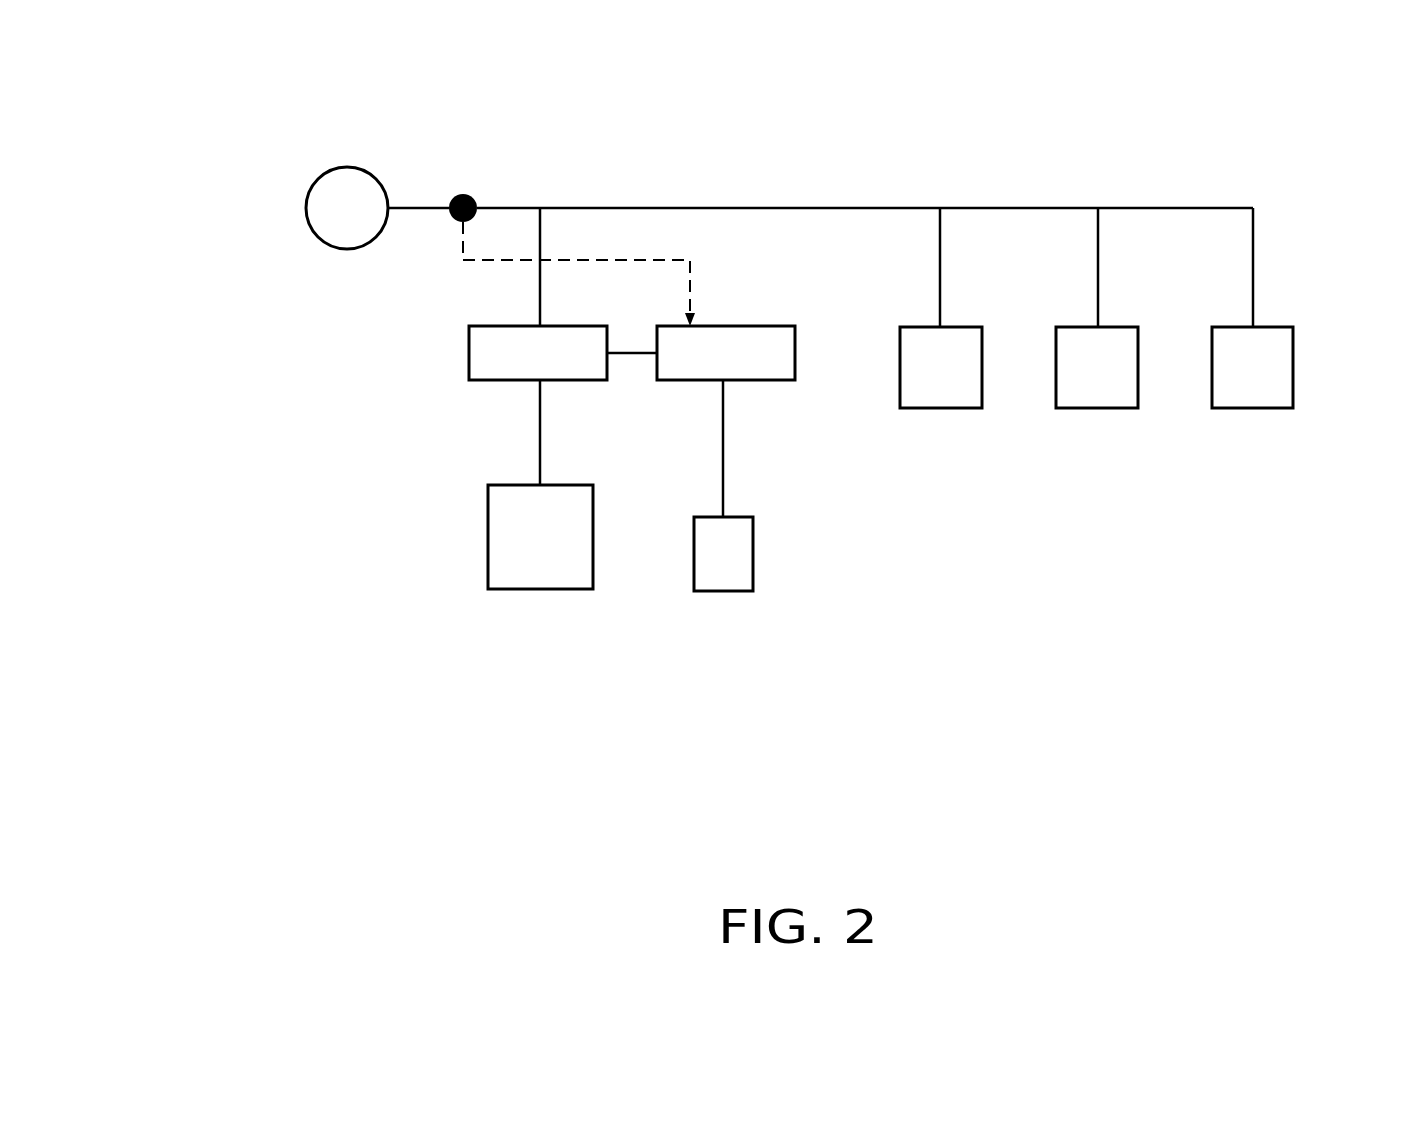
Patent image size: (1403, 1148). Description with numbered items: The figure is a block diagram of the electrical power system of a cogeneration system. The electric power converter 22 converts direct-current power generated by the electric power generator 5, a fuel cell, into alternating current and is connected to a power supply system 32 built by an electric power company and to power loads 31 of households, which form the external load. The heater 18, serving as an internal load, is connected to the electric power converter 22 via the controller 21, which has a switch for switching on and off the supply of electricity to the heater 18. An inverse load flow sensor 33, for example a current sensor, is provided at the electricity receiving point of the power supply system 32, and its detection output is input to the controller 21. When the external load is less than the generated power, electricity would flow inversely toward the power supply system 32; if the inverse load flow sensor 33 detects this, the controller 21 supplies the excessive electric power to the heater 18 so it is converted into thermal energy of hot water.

The power supply system 32 is at (313, 187).
The inverse load flow sensor 33 is at (472, 196).
The controller 21 is at (770, 326).
The electric power converter 22 is at (492, 380).
The electric power generator 5 is at (540, 590).
The heater 18 is at (753, 568).
The power loads 31 is at (942, 408).